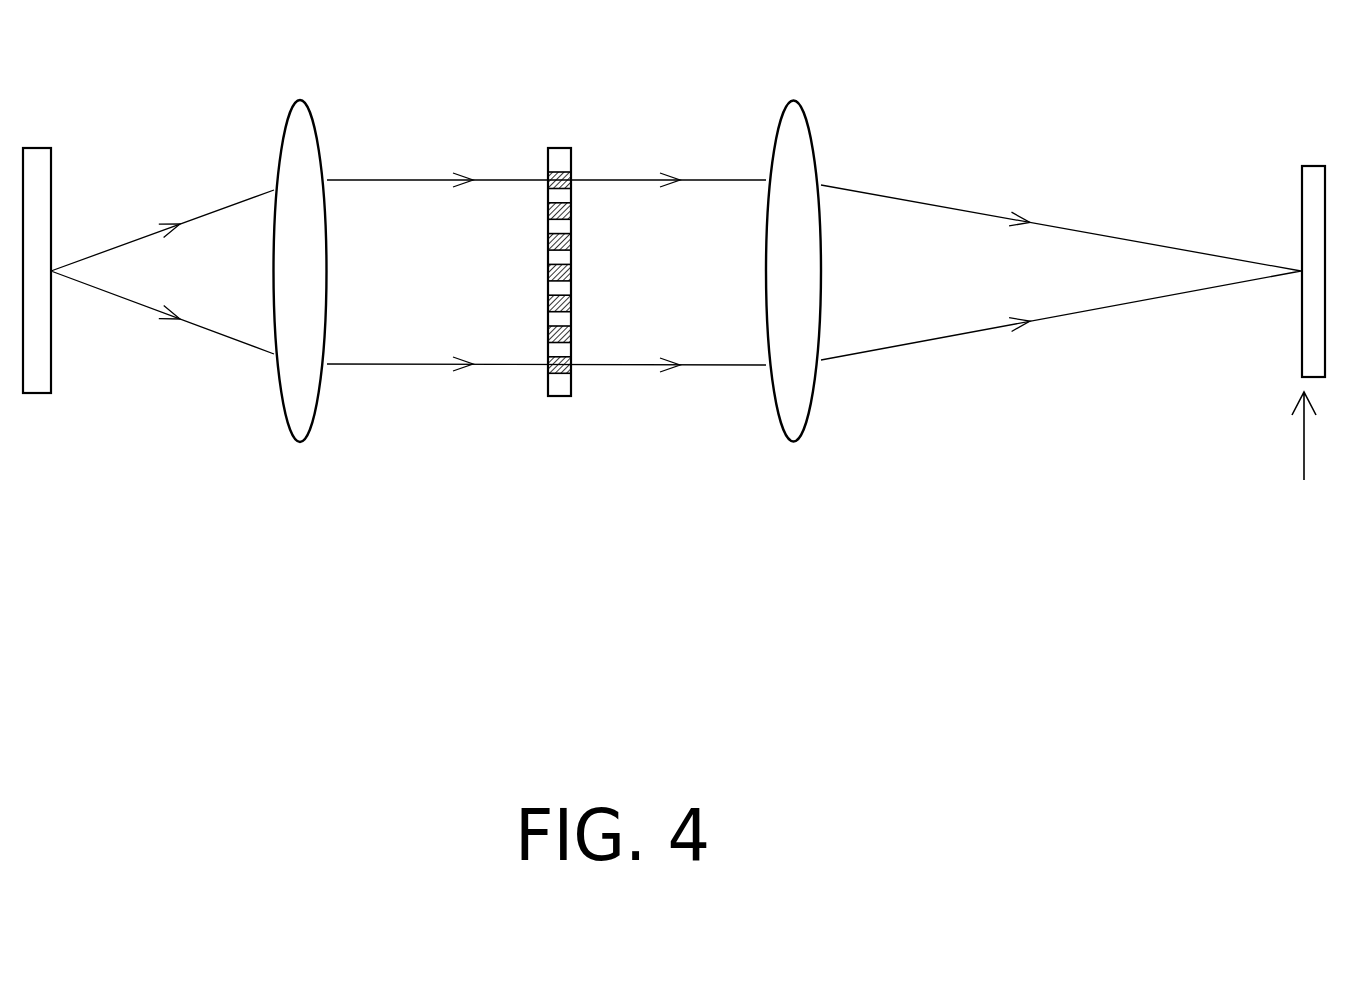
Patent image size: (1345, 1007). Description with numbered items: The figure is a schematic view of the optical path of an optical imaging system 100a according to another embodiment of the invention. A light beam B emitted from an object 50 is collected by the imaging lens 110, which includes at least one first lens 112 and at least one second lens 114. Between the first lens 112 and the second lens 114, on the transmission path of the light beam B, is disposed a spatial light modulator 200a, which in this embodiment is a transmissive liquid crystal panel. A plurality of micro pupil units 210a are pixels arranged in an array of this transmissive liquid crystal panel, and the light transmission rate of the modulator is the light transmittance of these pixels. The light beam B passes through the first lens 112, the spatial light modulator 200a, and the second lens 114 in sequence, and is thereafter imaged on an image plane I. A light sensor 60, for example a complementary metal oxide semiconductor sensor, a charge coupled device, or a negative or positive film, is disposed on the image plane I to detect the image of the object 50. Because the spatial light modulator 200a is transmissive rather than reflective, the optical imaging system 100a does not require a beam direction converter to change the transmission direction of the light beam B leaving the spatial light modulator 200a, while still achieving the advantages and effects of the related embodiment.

The object 50 is at (37, 383).
The light beam B is at (220, 207).
The first lens 112 is at (300, 412).
The second lens 114 is at (790, 407).
The imaging lens 110 is at (640, 606).
The spatial light modulator 200a is at (620, 211).
The micro pupil units 210a is at (573, 183).
The light sensor 60 is at (1311, 176).
The image plane I is at (1304, 464).
The optical imaging system 100a is at (1138, 739).